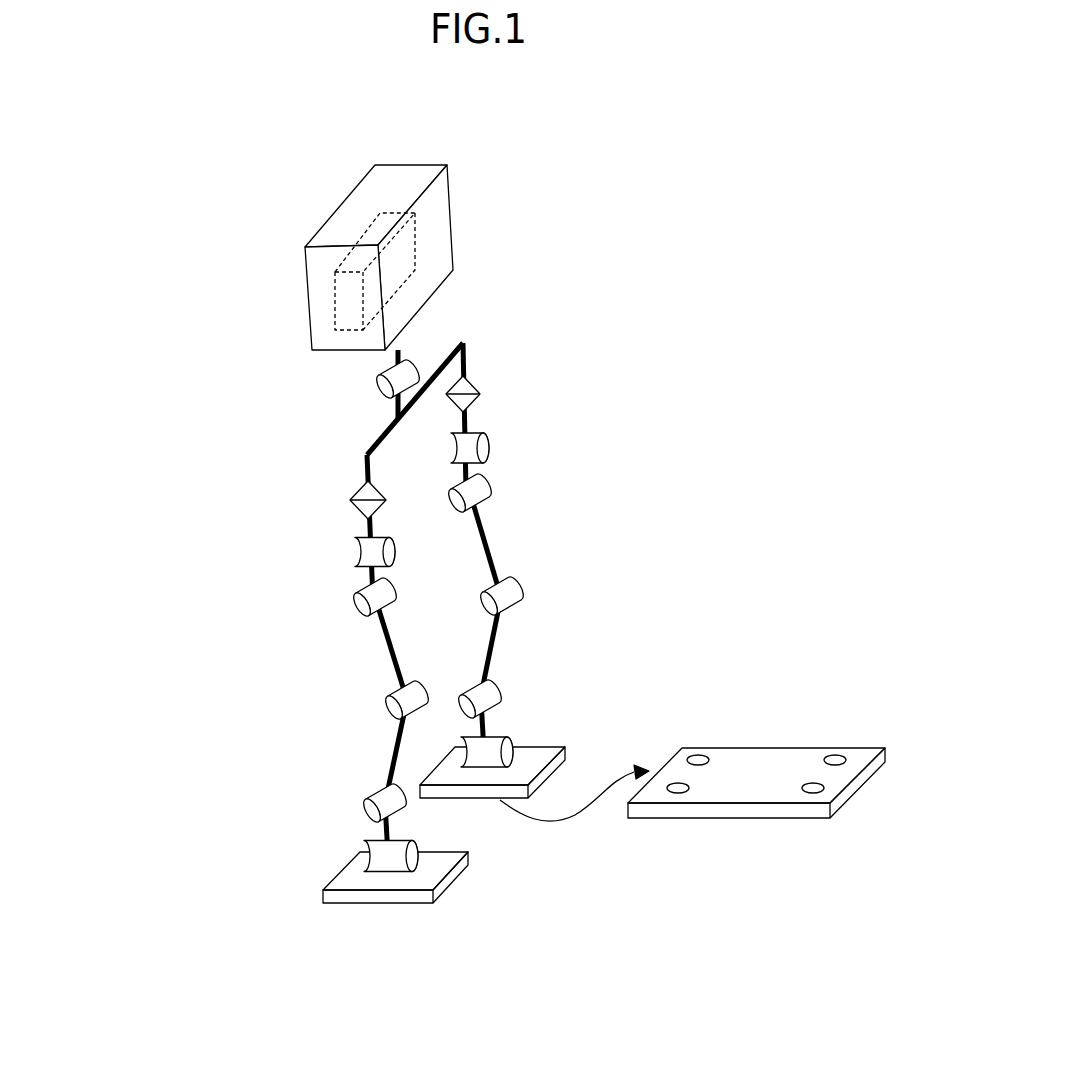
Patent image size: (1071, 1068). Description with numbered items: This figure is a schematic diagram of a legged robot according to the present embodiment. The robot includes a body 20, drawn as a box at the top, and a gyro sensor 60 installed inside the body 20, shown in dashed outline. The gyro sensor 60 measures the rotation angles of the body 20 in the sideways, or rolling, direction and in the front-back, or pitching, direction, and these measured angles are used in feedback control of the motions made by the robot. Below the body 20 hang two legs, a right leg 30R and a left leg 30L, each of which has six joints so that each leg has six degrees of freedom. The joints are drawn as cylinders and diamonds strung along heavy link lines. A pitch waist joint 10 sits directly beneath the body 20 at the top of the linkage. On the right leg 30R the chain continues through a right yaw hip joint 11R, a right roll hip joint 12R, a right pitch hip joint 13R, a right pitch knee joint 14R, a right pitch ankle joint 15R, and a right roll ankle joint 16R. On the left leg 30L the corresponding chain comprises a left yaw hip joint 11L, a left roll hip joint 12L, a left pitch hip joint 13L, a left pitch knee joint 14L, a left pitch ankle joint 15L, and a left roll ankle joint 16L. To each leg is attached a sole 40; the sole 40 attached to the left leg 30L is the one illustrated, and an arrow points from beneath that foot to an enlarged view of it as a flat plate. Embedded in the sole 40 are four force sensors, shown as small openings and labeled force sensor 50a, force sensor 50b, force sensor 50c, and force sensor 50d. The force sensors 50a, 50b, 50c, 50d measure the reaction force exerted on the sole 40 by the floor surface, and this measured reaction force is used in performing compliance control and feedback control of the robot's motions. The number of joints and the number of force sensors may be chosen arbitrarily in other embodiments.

The pitch waist joint 10 is at (410, 372).
The left yaw hip joint 11L is at (474, 386).
The left roll hip joint 12L is at (478, 450).
The left pitch hip joint 13L is at (480, 494).
The left pitch knee joint 14L is at (510, 591).
The left pitch ankle joint 15L is at (490, 695).
The left roll ankle joint 16L is at (500, 751).
The right yaw hip joint 11R is at (360, 494).
The right roll hip joint 12R is at (358, 551).
The right pitch hip joint 13R is at (362, 605).
The right pitch knee joint 14R is at (392, 703).
The right pitch ankle joint 15R is at (378, 809).
The right roll ankle joint 16R is at (372, 860).
The body 20 is at (412, 183).
The left leg 30L is at (512, 798).
The right leg 30R is at (375, 903).
The sole 40 is at (812, 748).
The force sensor 50a is at (698, 766).
The force sensor 50b is at (678, 793).
The force sensor 50c is at (835, 766).
The force sensor 50d is at (813, 793).
The gyro sensor 60 is at (415, 213).